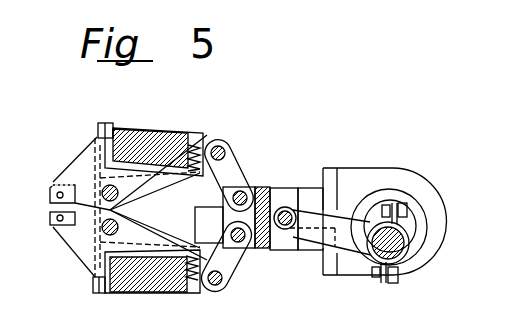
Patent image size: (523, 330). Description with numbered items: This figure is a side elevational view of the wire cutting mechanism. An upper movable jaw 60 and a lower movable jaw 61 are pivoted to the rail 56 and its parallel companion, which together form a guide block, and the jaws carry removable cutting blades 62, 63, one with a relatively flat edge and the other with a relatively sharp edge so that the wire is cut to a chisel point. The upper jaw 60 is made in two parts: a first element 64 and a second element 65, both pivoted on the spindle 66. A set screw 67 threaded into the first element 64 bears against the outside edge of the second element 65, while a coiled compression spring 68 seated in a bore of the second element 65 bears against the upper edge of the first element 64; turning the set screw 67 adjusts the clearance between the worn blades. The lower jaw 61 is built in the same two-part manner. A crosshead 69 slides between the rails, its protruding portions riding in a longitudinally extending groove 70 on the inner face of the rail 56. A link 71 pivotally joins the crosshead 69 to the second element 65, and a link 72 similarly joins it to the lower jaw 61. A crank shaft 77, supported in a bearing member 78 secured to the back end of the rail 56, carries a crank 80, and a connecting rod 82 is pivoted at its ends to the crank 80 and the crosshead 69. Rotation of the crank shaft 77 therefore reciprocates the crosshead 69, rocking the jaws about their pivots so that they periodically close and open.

The rail 56 is at (312, 195).
The upper movable jaw 60 is at (95, 138).
The lower movable jaw 61 is at (88, 262).
The cutting blade 62 is at (50, 202).
The cutting blade 63 is at (110, 210).
The first element 64 is at (72, 165).
The second element 65 is at (182, 133).
The spindle 66 is at (115, 195).
The set screw 67 is at (97, 123).
The coiled compression spring 68 is at (207, 138).
The crosshead 69 is at (280, 192).
The longitudinally extending groove 70 is at (321, 210).
The link 71 is at (233, 172).
The link 72 is at (230, 257).
The crank shaft 77 is at (380, 207).
The bearing member 78 is at (422, 180).
The crank 80 is at (400, 252).
The connecting rod 82 is at (330, 230).